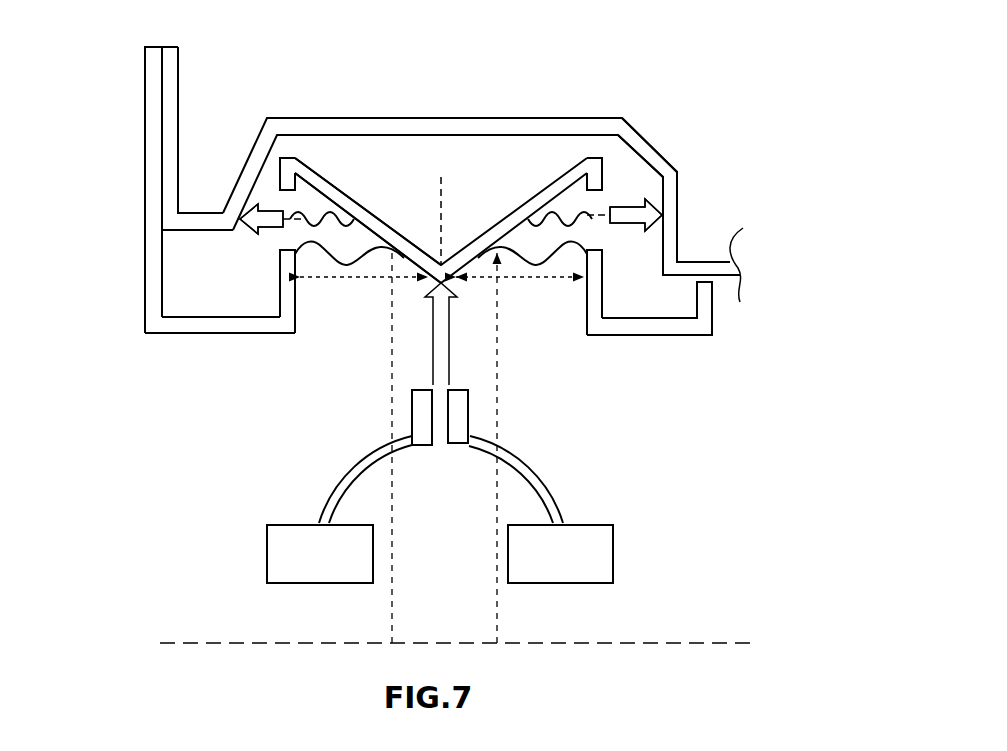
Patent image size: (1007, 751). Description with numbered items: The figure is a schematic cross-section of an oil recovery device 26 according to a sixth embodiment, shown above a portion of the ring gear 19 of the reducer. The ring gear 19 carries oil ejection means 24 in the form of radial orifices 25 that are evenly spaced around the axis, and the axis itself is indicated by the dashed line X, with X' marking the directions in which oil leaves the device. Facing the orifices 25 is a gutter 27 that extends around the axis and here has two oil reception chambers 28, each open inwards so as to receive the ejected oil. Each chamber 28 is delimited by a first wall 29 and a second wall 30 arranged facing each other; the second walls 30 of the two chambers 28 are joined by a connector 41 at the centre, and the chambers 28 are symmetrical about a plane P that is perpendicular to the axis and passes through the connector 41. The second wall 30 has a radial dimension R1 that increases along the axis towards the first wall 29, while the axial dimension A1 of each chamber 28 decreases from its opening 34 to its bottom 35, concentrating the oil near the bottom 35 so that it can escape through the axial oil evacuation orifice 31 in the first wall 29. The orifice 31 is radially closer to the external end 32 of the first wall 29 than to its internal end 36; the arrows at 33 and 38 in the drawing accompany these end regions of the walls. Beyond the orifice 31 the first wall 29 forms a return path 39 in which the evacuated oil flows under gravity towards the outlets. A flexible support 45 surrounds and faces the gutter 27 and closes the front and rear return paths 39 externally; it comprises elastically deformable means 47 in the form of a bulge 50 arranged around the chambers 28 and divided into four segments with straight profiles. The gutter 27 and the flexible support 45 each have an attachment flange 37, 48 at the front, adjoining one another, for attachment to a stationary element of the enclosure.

The ring gear 19 is at (570, 489).
The oil ejection means 24 is at (424, 402).
The orifices 25 is at (438, 418).
The oil recovery device 26 is at (768, 98).
The gutter 27 is at (371, 219).
The oil reception chamber 28 is at (332, 245).
The first wall 29 is at (282, 284).
The second wall 30 is at (391, 221).
The axial oil evacuation orifice 31 is at (282, 233).
The external end of the first wall 32 is at (442, 106).
The hook edge 33 is at (591, 157).
The opening of the chamber 34 is at (316, 292).
The bottom of the chamber 35 is at (300, 201).
The internal end of the first wall 36 is at (285, 322).
The attachment flange of the gutter 37 is at (150, 62).
The channel bottom 38 is at (200, 323).
The return path 39 is at (191, 288).
The connector 41 is at (447, 281).
The flexible support 45 is at (290, 112).
The elastically deformable means 47 is at (674, 164).
The attachment flange of the flexible support 48 is at (168, 56).
The bulge 50 is at (642, 128).
The axial dimension A1 is at (345, 277).
The plane of symmetry P is at (444, 204).
The radial dimension R1 is at (392, 316).
The axis X is at (457, 673).
The axis X' is at (460, 167).